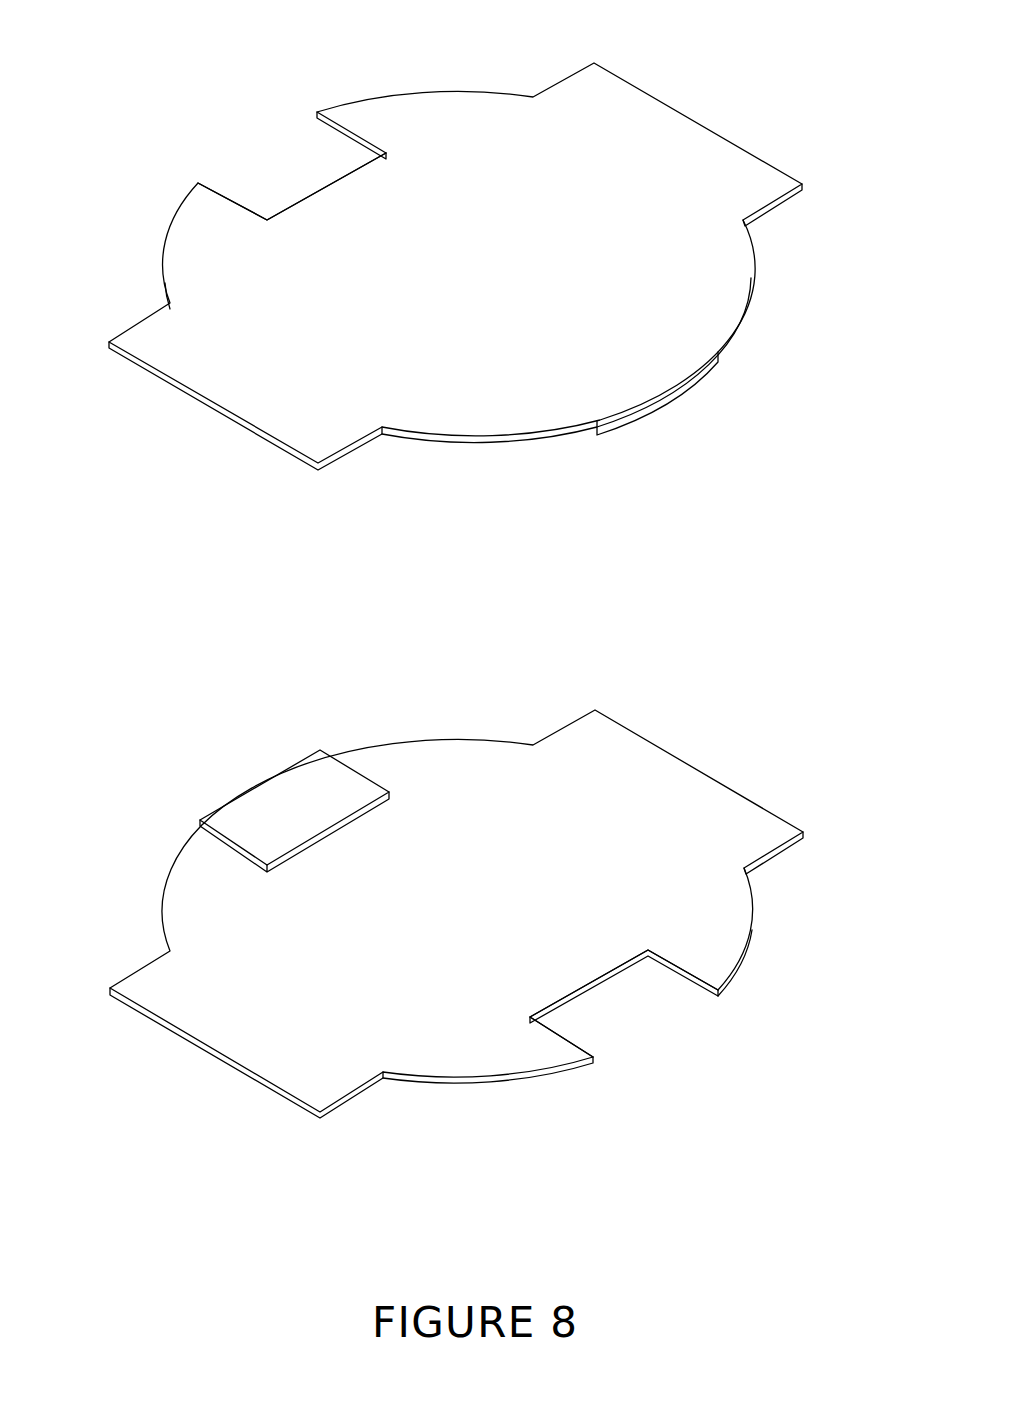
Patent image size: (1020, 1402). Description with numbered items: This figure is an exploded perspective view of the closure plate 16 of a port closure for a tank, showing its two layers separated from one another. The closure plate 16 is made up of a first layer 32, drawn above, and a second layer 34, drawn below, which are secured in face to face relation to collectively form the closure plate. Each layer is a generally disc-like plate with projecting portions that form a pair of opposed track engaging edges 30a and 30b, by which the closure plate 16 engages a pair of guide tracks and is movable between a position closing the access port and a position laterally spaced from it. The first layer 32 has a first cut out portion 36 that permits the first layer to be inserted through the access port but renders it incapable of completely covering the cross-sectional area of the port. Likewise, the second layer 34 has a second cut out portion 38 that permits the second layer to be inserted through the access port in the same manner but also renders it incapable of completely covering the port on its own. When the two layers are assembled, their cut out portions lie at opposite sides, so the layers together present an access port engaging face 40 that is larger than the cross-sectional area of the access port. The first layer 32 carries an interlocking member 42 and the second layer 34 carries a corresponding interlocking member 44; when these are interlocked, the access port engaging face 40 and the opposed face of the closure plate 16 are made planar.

The closure plate 16 is at (454, 248).
The track engaging edge 30a is at (695, 793).
The track engaging edge 30b is at (217, 1013).
The first layer 32 is at (750, 298).
The second layer 34 is at (748, 950).
The first cut out portion 36 is at (272, 163).
The second cut out portion 38 is at (658, 1025).
The access port engaging face 40 is at (560, 203).
The interlocking member 42 is at (660, 402).
The interlocking member 44 is at (277, 800).